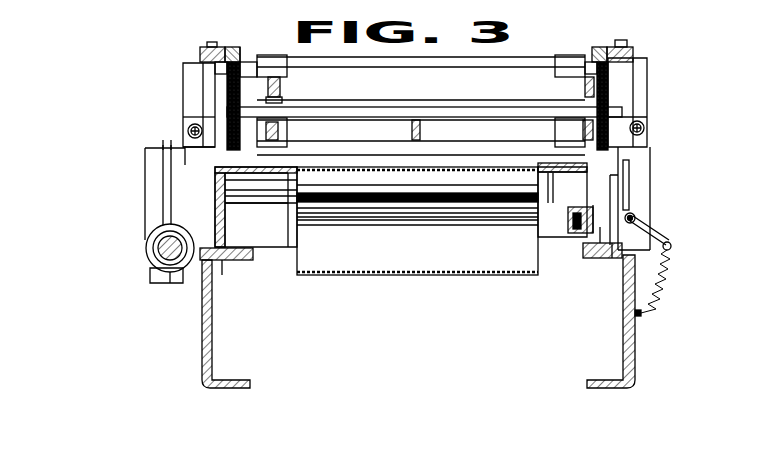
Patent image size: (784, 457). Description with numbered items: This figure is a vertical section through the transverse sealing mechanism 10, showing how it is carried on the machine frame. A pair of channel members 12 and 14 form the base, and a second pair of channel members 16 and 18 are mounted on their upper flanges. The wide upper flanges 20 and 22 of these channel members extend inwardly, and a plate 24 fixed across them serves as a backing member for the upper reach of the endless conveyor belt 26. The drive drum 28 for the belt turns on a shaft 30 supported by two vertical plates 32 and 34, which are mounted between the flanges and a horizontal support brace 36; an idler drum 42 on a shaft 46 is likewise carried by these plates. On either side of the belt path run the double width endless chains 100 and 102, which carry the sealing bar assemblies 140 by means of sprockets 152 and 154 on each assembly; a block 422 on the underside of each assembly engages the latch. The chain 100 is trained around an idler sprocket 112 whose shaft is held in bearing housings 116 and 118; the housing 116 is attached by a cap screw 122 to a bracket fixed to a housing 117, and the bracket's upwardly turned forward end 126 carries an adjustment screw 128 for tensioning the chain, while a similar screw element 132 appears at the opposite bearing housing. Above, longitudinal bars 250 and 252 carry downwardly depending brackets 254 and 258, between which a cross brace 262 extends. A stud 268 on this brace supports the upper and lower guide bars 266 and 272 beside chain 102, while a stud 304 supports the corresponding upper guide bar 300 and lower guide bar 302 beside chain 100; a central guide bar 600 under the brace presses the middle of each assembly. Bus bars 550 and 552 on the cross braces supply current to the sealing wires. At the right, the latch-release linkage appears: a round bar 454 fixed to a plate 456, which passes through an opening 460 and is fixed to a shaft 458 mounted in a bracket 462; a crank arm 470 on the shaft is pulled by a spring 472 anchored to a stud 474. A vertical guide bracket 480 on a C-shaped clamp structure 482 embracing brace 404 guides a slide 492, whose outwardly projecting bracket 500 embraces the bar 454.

The transverse sealing mechanism 10 is at (205, 45).
The channel member 12 is at (205, 338).
The channel member 14 is at (632, 355).
The channel member 16 is at (222, 262).
The channel member 18 is at (614, 258).
The upper flange 20 is at (215, 186).
The upper flange 22 is at (562, 200).
The plate 24 is at (490, 160).
The endless conveyor belt 26 is at (414, 247).
The drive drum 28 is at (225, 212).
The shaft 30 is at (215, 200).
The vertical plate 32 is at (270, 228).
The vertical plate 34 is at (543, 178).
The support brace 36 is at (275, 262).
The idler drum 42 is at (364, 194).
The shaft 46 is at (272, 183).
The endless chain 100 is at (215, 152).
The endless chain 102 is at (605, 117).
The idler sprocket 112 is at (210, 147).
The bearing housing 116 is at (190, 82).
The housing 117 is at (150, 190).
The bearing housing 118 is at (642, 92).
The cap screw 122 is at (195, 143).
The forward end 126 is at (183, 117).
The adjustment screw 128 is at (188, 130).
The screw 132 is at (653, 137).
The sealing bar assembly 140 is at (455, 65).
The sprocket 152 is at (250, 62).
The sprocket 154 is at (600, 62).
The bar 250 is at (633, 55).
The bar 252 is at (205, 57).
The bracket 254 is at (612, 67).
The bracket 258 is at (222, 78).
The cross brace 262 is at (345, 108).
The guide bar 266 is at (583, 90).
The stud 268 is at (575, 82).
The guide bar 272 is at (582, 128).
The upper guide bar 300 is at (283, 94).
The lower guide bar 302 is at (279, 130).
The stud 304 is at (235, 97).
The brace 404 is at (572, 228).
The block 422 is at (252, 48).
The round bar 454 is at (613, 217).
The plate 456 is at (670, 242).
The shaft 458 is at (637, 218).
The opening 460 is at (620, 195).
The bracket 462 is at (627, 178).
The crank arm 470 is at (672, 247).
The spring 472 is at (660, 270).
The stud 474 is at (641, 313).
The vertical guide bracket 480 is at (567, 213).
The C-shaped clamp structure 482 is at (600, 220).
The slide 492 is at (610, 212).
The bracket 500 is at (600, 230).
The bus bar 550 is at (560, 80).
The bus bar 552 is at (282, 83).
The guide bar 600 is at (421, 130).